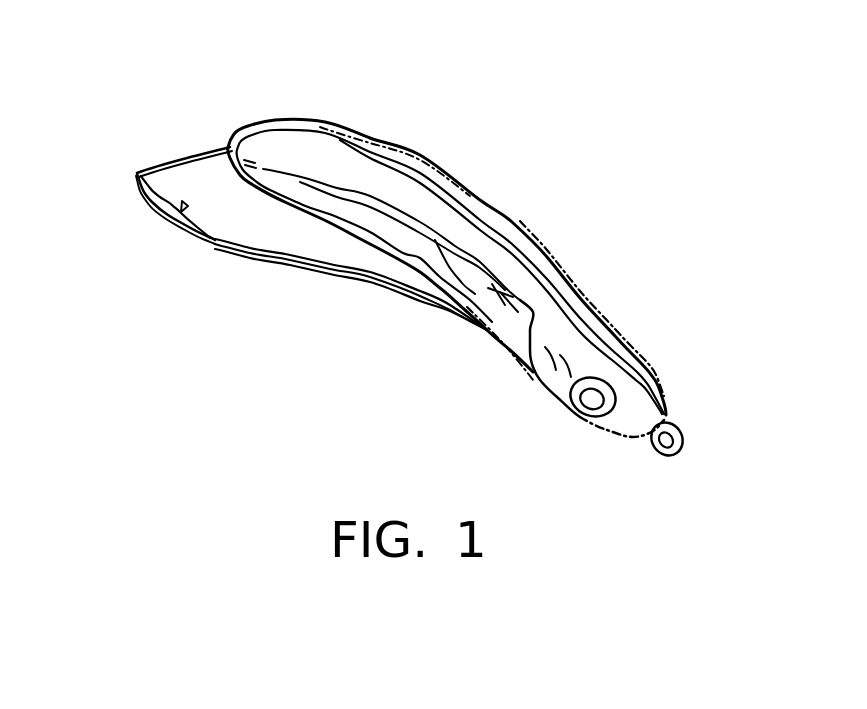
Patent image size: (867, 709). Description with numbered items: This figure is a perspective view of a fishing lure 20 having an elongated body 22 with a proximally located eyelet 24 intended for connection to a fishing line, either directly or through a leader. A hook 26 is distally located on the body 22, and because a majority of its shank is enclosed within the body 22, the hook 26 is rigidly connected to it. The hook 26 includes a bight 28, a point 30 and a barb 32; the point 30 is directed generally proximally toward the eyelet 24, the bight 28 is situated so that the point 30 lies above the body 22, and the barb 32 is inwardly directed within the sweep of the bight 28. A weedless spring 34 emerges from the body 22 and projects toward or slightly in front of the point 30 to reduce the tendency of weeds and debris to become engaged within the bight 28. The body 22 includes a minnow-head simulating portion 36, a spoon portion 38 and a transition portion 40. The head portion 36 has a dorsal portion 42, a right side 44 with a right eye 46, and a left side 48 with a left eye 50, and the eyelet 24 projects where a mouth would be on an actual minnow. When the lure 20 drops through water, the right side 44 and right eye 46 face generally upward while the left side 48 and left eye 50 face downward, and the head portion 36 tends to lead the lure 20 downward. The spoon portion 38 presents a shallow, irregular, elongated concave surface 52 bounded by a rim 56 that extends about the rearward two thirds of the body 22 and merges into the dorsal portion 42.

The fishing lure 20 is at (641, 213).
The elongated body 22 is at (512, 224).
The eyelet 24 is at (679, 434).
The hook 26 is at (185, 146).
The bight 28 is at (137, 174).
The point 30 is at (208, 243).
The barb 32 is at (180, 217).
The weedless spring 34 is at (343, 270).
The minnow-head simulating portion 36 is at (613, 438).
The spoon portion 38 is at (297, 121).
The transition portion 40 is at (490, 295).
The dorsal portion 42 is at (597, 332).
The right side 44 is at (537, 397).
The right eye 46 is at (583, 404).
The left side 48 is at (615, 349).
The left eye 50 is at (655, 373).
The concave surface 52 is at (305, 178).
The rim 56 is at (255, 131).